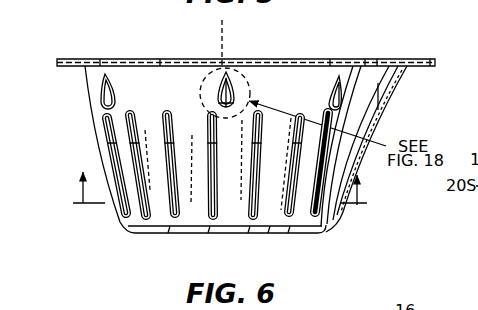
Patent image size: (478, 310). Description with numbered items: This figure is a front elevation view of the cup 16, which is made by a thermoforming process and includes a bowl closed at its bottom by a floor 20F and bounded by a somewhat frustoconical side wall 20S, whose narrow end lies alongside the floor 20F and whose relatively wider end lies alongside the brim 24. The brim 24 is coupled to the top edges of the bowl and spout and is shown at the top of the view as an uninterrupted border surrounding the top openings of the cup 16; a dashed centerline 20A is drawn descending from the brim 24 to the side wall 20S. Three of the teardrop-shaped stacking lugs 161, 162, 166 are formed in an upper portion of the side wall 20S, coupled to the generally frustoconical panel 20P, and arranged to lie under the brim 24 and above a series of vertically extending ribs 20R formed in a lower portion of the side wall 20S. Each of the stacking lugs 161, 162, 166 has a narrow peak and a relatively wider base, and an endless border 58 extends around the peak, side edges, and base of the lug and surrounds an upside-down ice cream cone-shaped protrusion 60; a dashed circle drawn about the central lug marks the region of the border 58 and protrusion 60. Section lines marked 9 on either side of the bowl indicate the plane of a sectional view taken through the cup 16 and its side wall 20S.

The brim 24 is at (78, 61).
The cup 16 is at (351, 47).
The side wall 20S is at (90, 108).
The floor 20F is at (148, 232).
The ribs 20R is at (293, 205).
The frustoconical panel 20P is at (193, 208).
The central axis 20A is at (222, 36).
The stacking lug 166 is at (118, 88).
The protrusion 60 is at (228, 78).
The stacking lug 161 is at (248, 82).
The stacking lug 162 is at (331, 84).
The endless border 58 is at (215, 103).
The section line 9- 9 is at (220, 201).